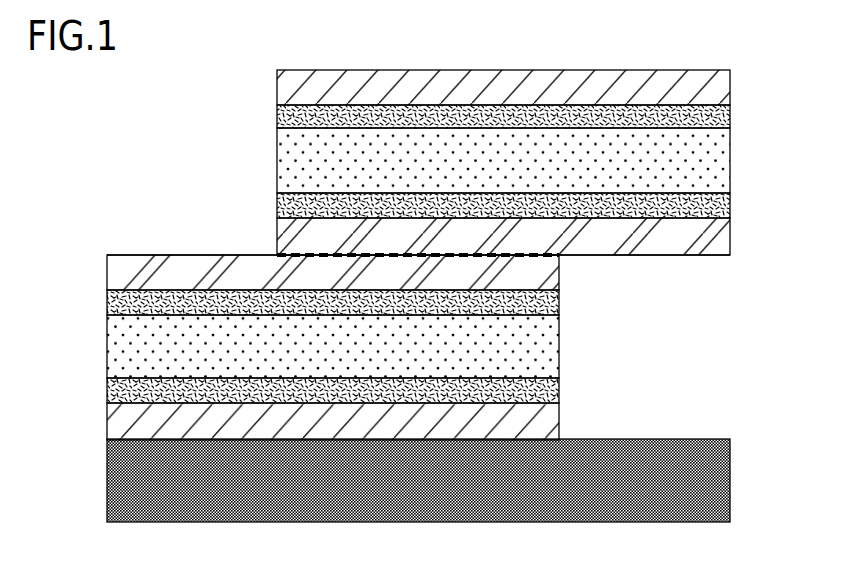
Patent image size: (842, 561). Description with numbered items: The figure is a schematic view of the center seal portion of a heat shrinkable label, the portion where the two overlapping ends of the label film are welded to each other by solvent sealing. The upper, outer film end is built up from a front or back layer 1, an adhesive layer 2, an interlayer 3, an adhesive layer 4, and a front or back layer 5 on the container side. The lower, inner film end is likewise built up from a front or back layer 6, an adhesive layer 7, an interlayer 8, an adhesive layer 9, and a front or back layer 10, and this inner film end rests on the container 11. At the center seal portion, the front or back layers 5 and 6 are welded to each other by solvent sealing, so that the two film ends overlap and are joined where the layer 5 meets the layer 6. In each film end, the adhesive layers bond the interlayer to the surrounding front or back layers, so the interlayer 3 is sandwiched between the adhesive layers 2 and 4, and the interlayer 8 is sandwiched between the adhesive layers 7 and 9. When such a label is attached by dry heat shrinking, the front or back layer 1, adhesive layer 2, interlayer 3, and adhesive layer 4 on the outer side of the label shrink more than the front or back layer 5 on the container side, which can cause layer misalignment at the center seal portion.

The front or back layer 1 is at (716, 86).
The adhesive layer 2 is at (716, 120).
The interlayer 3 is at (716, 167).
The adhesive layer 4 is at (716, 205).
The front or back layer 5 is at (716, 238).
The front or back layer 6 is at (120, 272).
The adhesive layer 7 is at (120, 302).
The interlayer 8 is at (120, 347).
The adhesive layer 9 is at (120, 395).
The front or back layer 10 is at (120, 421).
The container 11 is at (120, 480).